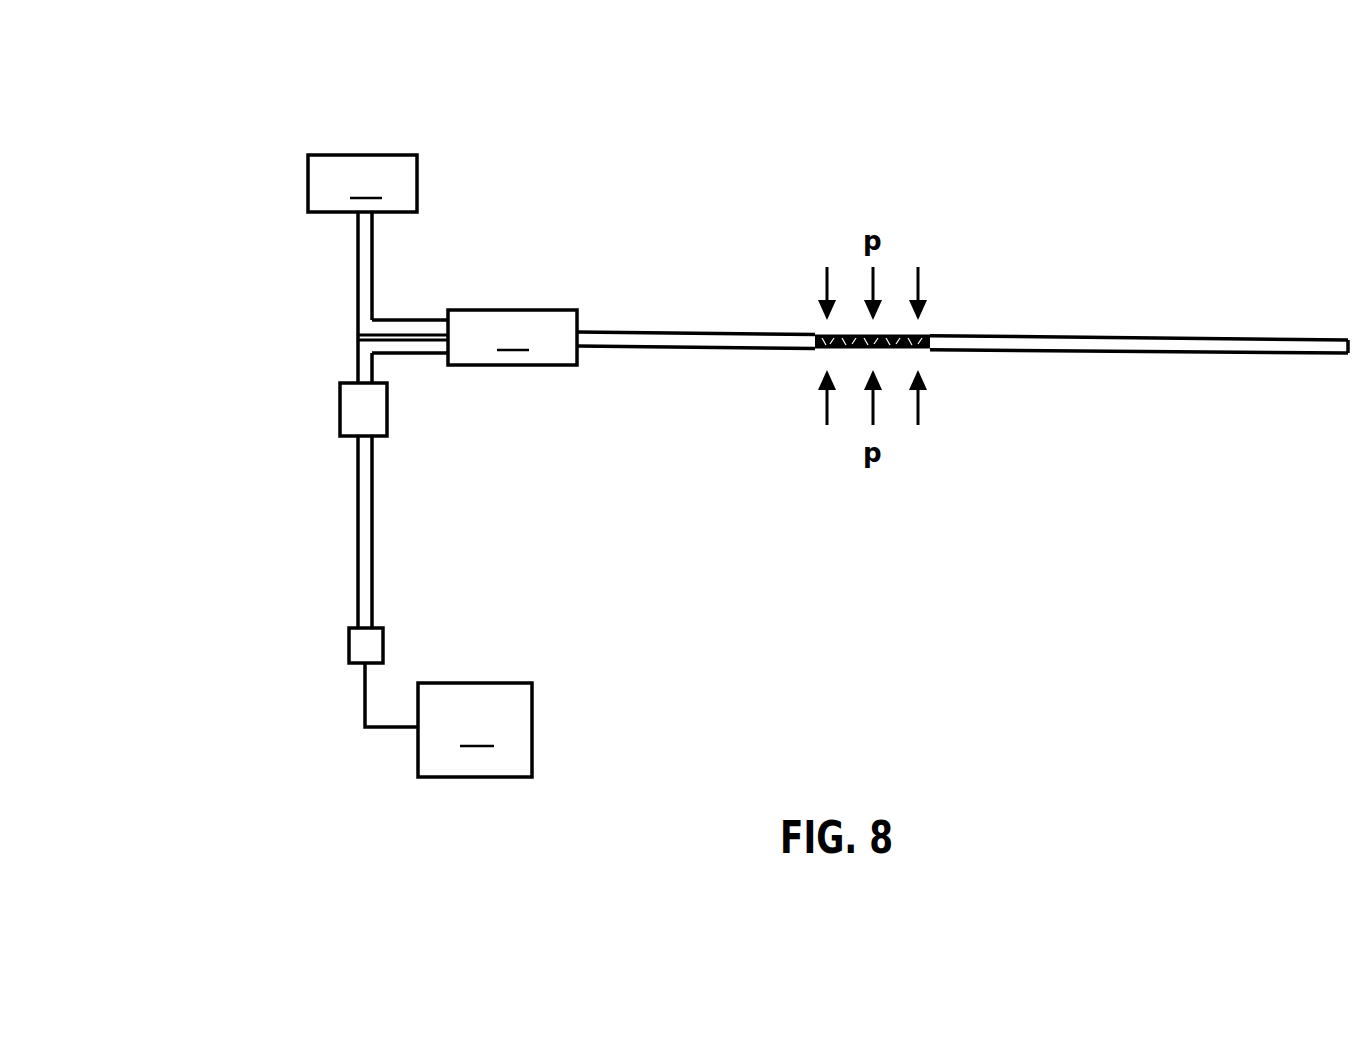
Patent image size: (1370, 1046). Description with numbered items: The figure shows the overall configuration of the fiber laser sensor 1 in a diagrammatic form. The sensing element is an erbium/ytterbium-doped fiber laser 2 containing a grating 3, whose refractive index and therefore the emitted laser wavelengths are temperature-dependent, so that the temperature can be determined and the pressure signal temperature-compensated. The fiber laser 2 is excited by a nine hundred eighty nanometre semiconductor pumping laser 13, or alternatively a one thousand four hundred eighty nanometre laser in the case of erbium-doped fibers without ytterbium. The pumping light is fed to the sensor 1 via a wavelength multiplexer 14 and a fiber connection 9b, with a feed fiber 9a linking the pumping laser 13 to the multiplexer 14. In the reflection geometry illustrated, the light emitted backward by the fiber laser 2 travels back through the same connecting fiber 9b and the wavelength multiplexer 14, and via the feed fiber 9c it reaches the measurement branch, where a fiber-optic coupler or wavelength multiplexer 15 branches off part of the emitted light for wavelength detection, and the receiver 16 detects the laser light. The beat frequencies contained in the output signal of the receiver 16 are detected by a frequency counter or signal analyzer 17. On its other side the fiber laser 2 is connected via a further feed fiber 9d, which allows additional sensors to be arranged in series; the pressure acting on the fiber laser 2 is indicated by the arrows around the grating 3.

The fiber laser sensor 1 is at (310, 93).
The fiber laser 2 is at (925, 335).
The grating 3 is at (823, 348).
The feed fiber 9a is at (410, 330).
The connecting fiber 9b is at (687, 342).
The feed fiber 9c is at (410, 345).
The feed fiber 9d is at (1150, 343).
The pumping laser 13 is at (362, 183).
The wavelength multiplexer 14 is at (512, 337).
The fiber-optic coupler 15 is at (358, 405).
The receiver 16 is at (367, 645).
The signal analyzer 17 is at (475, 730).